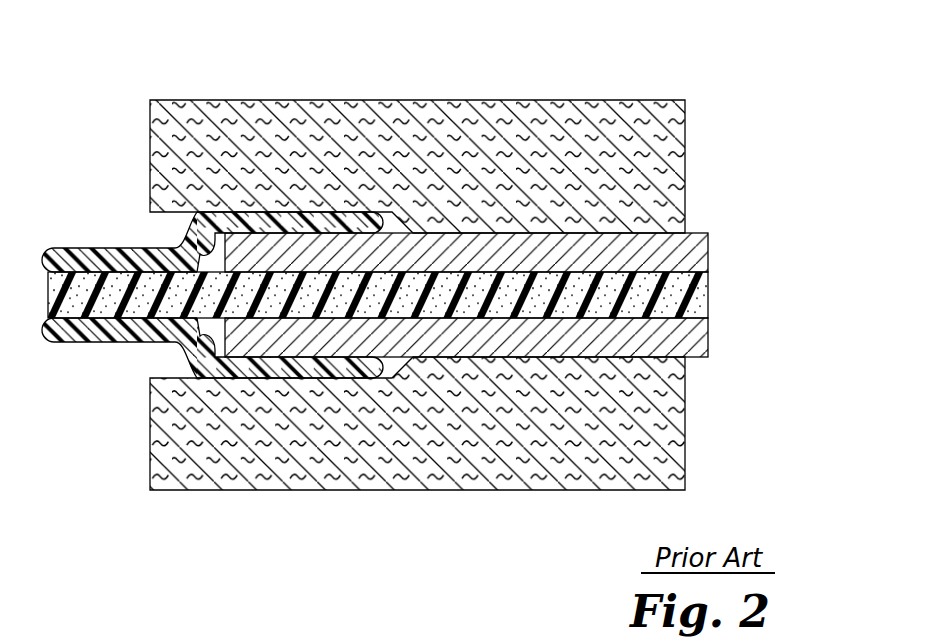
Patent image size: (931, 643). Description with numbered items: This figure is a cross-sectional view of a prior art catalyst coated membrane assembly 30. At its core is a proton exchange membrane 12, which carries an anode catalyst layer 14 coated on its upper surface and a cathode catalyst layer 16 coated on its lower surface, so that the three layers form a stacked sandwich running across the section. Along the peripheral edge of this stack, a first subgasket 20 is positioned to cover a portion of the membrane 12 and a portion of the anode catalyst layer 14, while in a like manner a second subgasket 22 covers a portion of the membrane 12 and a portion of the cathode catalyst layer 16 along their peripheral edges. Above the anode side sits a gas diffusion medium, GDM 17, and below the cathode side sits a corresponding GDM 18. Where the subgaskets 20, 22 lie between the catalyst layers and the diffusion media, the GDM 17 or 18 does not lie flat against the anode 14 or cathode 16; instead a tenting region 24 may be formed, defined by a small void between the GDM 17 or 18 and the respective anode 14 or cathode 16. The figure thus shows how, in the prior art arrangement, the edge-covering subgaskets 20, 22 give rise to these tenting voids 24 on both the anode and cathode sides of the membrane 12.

The prior art sealing assembly 30 is at (598, 74).
The GDM 17 is at (680, 171).
The GDM 18 is at (674, 453).
The anode catalyst layer 14 is at (700, 245).
The cathode catalyst layer 16 is at (702, 340).
The proton exchange membrane 12 is at (706, 296).
The first subgasket 20 is at (102, 247).
The second subgasket 22 is at (78, 345).
The tenting region 24 is at (213, 213).